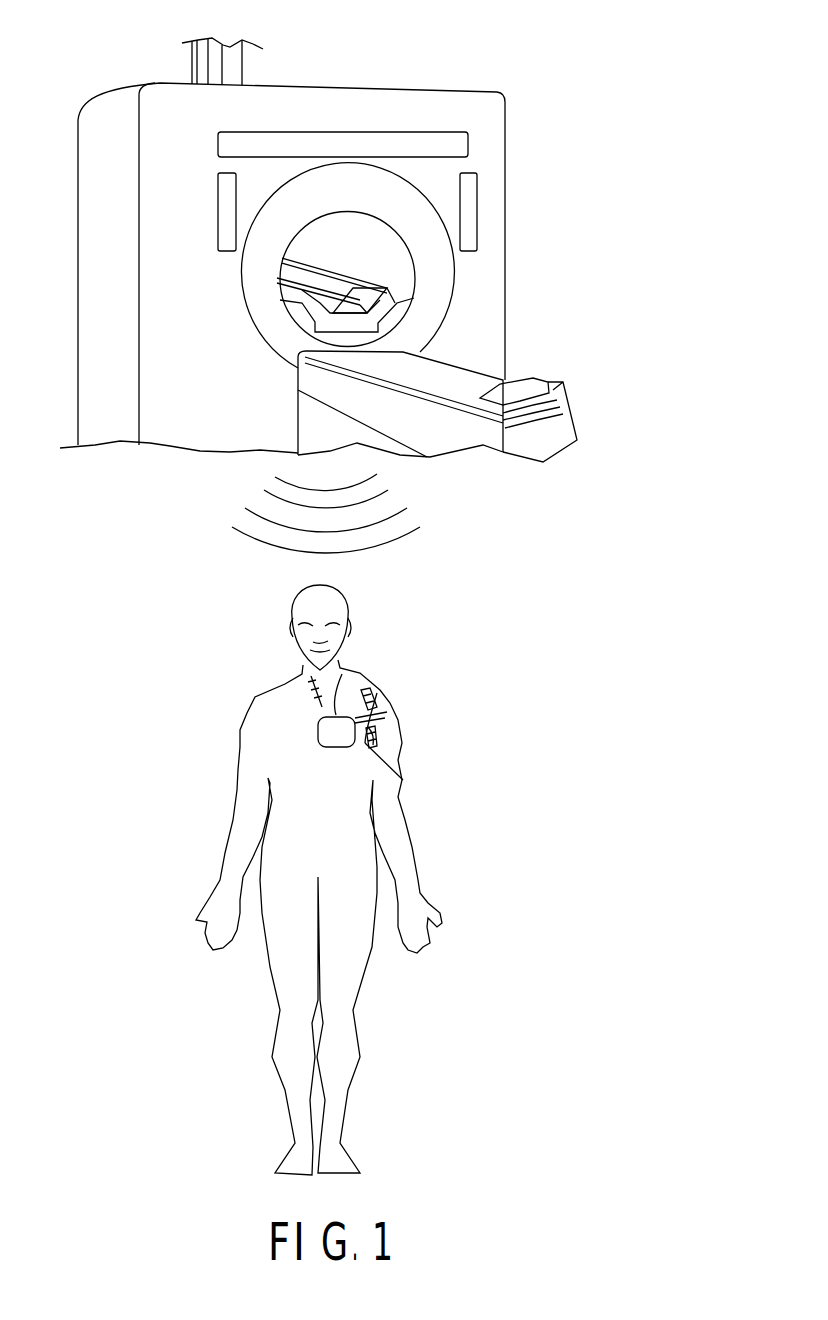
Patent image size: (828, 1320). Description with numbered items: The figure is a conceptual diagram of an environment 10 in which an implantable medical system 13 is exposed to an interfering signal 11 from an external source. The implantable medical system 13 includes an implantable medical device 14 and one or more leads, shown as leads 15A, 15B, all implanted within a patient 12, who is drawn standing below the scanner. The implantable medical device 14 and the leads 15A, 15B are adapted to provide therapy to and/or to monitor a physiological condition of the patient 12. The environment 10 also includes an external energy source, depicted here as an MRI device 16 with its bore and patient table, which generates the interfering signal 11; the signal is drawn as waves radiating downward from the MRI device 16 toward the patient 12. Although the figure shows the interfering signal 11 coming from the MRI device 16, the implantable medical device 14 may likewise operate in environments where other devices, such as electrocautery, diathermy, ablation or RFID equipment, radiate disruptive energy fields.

The environment 10 is at (594, 95).
The MRI device 16 is at (520, 277).
The interfering signal 11 is at (440, 497).
The patient 12 is at (232, 727).
The implantable medical system 13 is at (301, 668).
The implantable medical device 14 is at (343, 667).
The lead 15A is at (368, 690).
The lead 15B is at (412, 780).